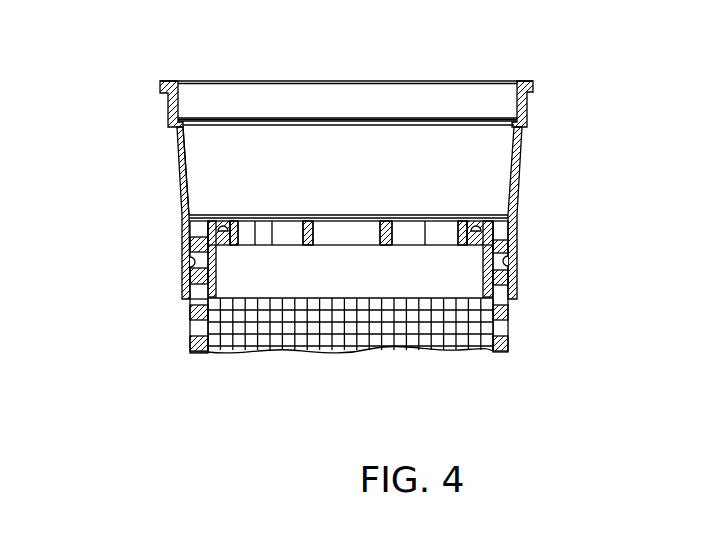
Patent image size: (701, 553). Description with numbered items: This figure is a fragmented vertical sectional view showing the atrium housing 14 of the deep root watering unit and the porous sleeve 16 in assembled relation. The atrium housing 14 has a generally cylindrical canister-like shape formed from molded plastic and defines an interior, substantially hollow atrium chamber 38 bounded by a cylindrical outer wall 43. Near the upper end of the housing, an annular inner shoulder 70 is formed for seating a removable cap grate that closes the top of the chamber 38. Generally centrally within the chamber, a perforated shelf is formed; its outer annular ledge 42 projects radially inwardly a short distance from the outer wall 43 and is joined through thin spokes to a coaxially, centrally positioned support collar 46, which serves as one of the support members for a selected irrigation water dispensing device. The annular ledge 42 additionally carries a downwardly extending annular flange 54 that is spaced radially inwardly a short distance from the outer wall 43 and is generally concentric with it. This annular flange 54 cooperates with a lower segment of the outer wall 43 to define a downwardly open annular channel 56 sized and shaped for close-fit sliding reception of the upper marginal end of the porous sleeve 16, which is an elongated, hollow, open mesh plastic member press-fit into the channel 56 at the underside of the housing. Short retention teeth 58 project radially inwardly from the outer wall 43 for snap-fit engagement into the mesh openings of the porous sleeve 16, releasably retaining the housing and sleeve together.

The atrium housing 14 is at (157, 220).
The porous sleeve 16 is at (190, 357).
The atrium chamber 38 is at (390, 115).
The annular ledge 42 is at (270, 297).
The outer wall 43 is at (187, 183).
The support collar 46 is at (404, 294).
The annular flange 54 is at (217, 283).
The annular channel 56 is at (198, 297).
The retention teeth 58 is at (192, 268).
The inner shoulder 70 is at (178, 100).